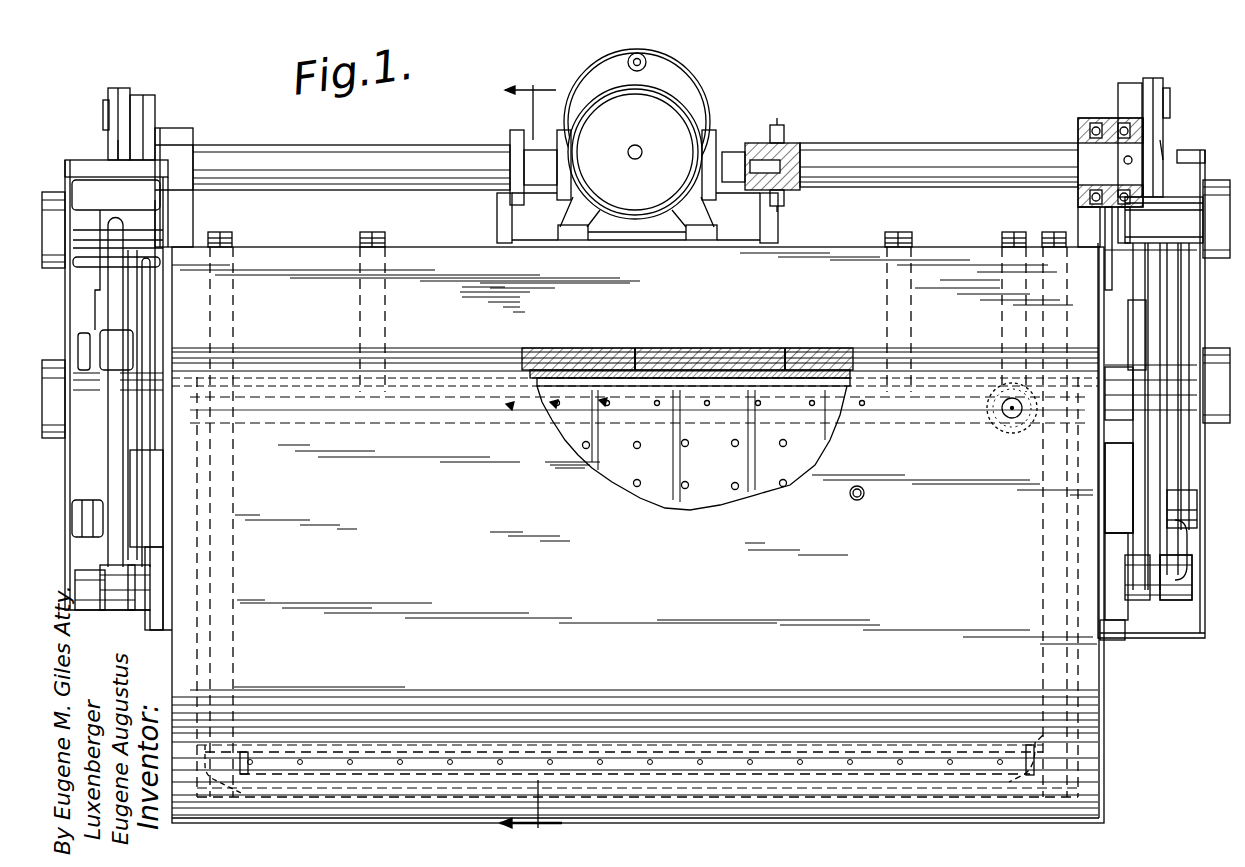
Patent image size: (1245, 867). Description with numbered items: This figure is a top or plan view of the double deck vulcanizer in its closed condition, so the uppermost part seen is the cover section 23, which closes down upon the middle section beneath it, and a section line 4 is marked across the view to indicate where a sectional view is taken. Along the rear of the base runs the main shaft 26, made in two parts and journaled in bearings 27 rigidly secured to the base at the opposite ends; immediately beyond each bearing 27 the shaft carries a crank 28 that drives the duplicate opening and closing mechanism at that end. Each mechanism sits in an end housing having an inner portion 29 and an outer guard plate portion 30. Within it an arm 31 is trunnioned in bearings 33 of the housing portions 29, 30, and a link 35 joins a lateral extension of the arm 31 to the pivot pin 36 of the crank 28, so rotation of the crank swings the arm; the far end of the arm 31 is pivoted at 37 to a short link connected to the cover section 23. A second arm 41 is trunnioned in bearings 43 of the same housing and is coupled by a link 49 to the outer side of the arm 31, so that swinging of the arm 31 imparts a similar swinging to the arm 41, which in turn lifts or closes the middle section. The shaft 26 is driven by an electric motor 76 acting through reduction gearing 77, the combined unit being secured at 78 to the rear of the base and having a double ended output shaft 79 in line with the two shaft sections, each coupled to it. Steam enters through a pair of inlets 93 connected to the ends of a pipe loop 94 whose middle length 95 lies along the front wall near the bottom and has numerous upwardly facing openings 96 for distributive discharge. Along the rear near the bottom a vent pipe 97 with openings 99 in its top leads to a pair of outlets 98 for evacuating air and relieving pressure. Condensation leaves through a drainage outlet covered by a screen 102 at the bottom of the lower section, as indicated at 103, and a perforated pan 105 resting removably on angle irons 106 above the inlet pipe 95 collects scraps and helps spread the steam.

The section line 4- 4 is at (532, 444).
The cover section 23 is at (1097, 712).
The main shaft 26 is at (430, 135).
The bearings 27 is at (188, 130).
The crank 28 is at (148, 95).
The inner portion of housing 29 is at (173, 222).
The outer guard plate portion 30 is at (68, 490).
The arm 31 is at (118, 312).
The bearings 33 is at (110, 180).
The link 35 is at (116, 143).
The pivot pin 36 is at (103, 108).
The pivot 37 is at (1178, 575).
The arm 41 is at (1178, 532).
The bearings 43 is at (1133, 372).
The link 49 is at (1180, 460).
The electric motor 76 is at (636, 156).
The reduction gearing 77 is at (690, 92).
The securing point of motor unit 78 is at (558, 232).
The double ended output shaft 79 is at (750, 160).
The inlets 93 is at (232, 236).
The pipe loop 94 is at (233, 553).
The middle length of pipe loop 95 is at (920, 752).
The upwardly facing openings 96 is at (958, 748).
The vent pipe 97 is at (693, 420).
The outlets 98 is at (385, 236).
The openings 99 is at (603, 410).
The screen 102 is at (998, 432).
The drainage outlet location 103 is at (1004, 234).
The perforated pan 105 is at (613, 384).
The angle irons 106 is at (553, 370).